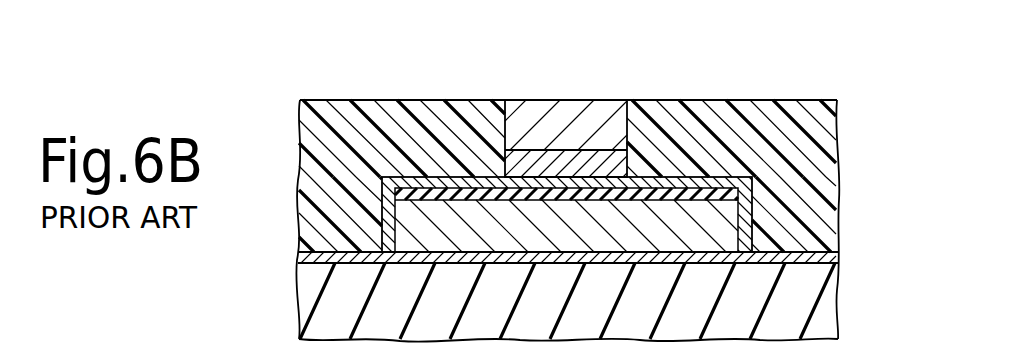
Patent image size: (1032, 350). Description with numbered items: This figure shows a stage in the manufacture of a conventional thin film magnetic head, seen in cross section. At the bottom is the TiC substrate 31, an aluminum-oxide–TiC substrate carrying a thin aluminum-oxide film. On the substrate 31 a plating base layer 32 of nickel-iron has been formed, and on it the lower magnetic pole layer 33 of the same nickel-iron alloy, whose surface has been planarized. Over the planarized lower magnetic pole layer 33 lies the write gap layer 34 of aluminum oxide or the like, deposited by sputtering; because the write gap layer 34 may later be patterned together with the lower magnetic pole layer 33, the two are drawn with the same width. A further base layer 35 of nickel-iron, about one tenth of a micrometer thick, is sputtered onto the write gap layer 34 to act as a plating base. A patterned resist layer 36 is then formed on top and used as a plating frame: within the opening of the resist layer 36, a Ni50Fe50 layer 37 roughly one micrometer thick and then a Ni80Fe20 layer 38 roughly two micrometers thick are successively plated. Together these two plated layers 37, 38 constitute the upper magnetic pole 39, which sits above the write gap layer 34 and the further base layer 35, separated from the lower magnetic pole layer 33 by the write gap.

The TiC substrate 31 is at (828, 313).
The plating base layer 32 is at (737, 257).
The lower magnetic pole layer 33 is at (730, 222).
The write gap layer 34 is at (730, 193).
The further base layer 35 is at (317, 185).
The patterned resist layer 36 is at (822, 138).
The Ni50Fe50 layer 37 is at (538, 153).
The Ni80Fe20 layer 38 is at (595, 130).
The upper magnetic pole 39 is at (618, 50).